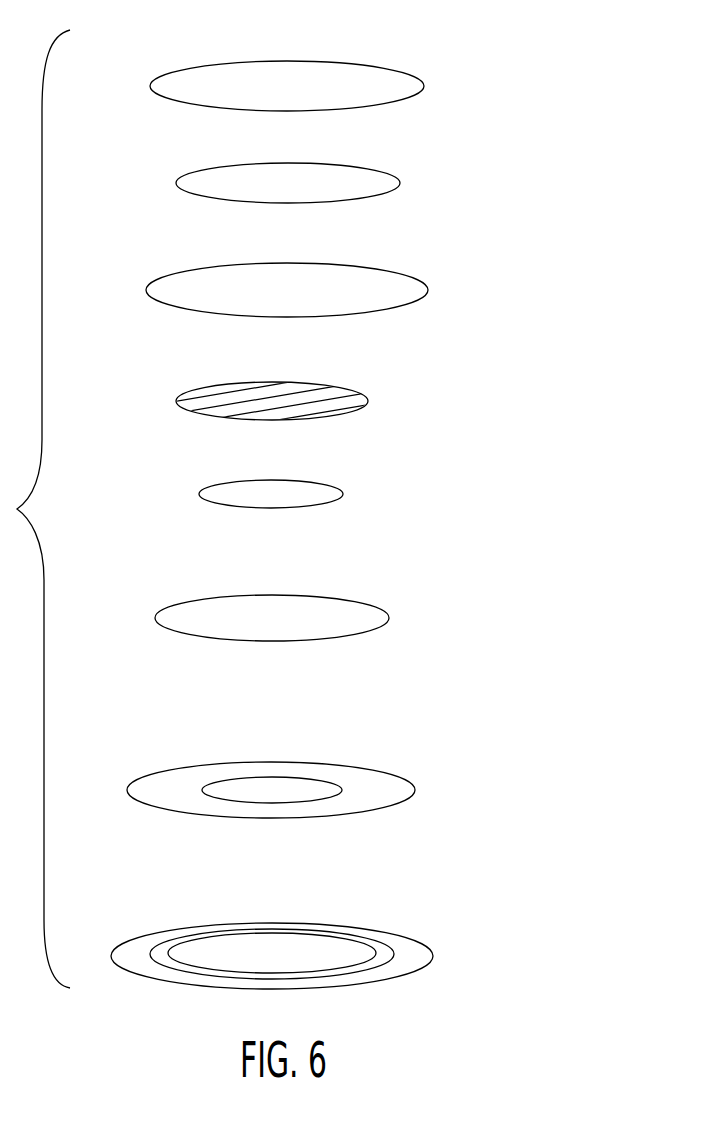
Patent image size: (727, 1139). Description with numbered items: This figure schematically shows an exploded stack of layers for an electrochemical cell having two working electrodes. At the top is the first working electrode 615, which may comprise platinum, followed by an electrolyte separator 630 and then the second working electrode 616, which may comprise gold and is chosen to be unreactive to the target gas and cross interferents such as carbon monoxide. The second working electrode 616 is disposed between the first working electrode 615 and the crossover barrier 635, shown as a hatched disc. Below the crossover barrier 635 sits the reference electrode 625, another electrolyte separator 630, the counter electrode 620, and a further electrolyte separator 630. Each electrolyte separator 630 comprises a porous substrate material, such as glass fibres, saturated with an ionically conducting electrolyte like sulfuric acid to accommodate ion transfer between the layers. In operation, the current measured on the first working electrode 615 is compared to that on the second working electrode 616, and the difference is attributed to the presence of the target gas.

The first working electrode 615 is at (405, 86).
The electrolyte separator 630 is at (382, 184).
The second working electrode 616 is at (410, 293).
The crossover barrier 635 is at (350, 402).
The reference electrode 625 is at (325, 495).
The counter electrode 620 is at (397, 789).